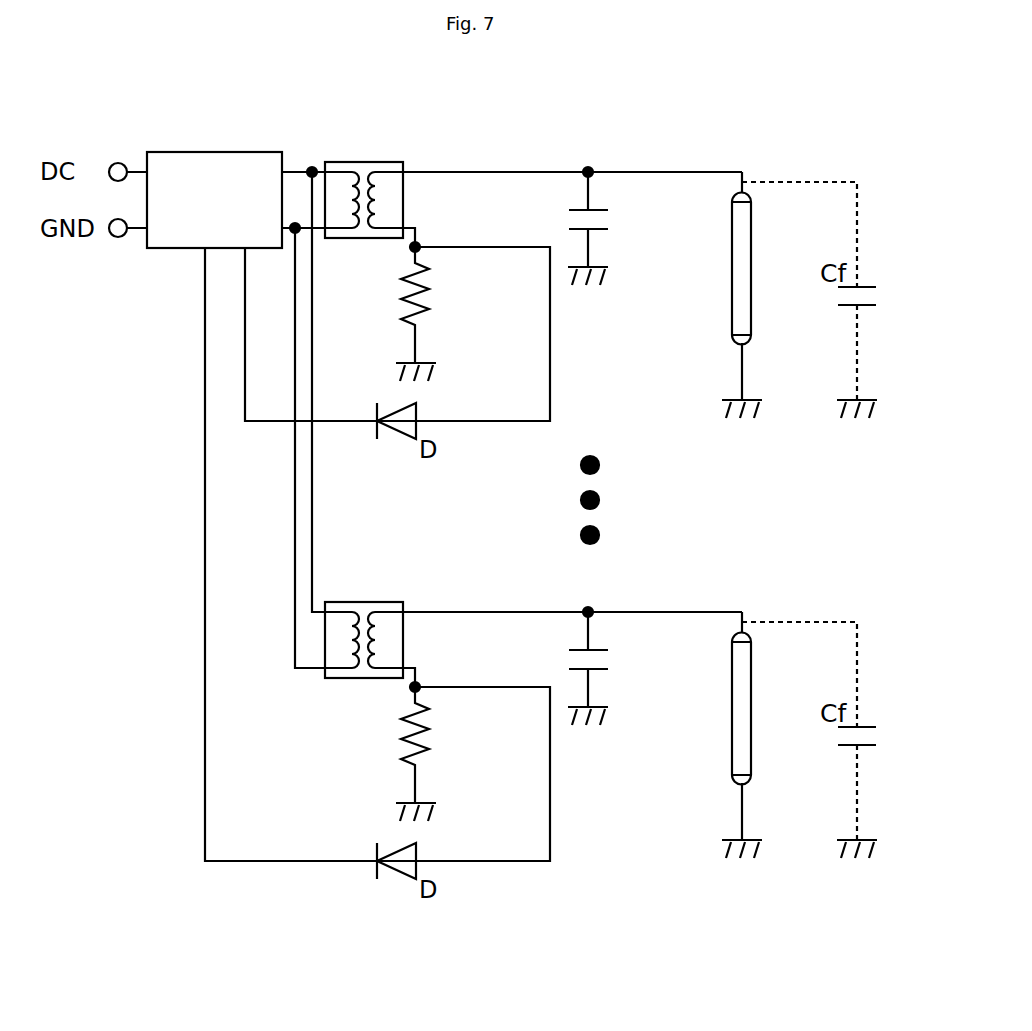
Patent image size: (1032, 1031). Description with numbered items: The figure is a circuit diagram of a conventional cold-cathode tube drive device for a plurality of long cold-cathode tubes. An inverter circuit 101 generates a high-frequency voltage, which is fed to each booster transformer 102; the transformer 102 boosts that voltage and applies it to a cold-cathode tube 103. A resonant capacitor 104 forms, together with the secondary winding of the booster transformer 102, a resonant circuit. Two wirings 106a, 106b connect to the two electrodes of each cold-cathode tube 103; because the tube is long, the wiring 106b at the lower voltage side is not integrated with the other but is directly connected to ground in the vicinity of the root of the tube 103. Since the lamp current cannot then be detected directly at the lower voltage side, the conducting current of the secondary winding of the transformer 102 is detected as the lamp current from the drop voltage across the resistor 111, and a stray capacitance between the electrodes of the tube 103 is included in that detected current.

The inverter circuit 101 is at (242, 152).
The booster transformer 102 is at (378, 162).
The cold-cathode tube 103 is at (752, 250).
The resonant capacitor 104 is at (613, 212).
The wiring 106a is at (743, 182).
The wiring at the lower voltage side 106b is at (744, 365).
The resistor 111 is at (430, 302).